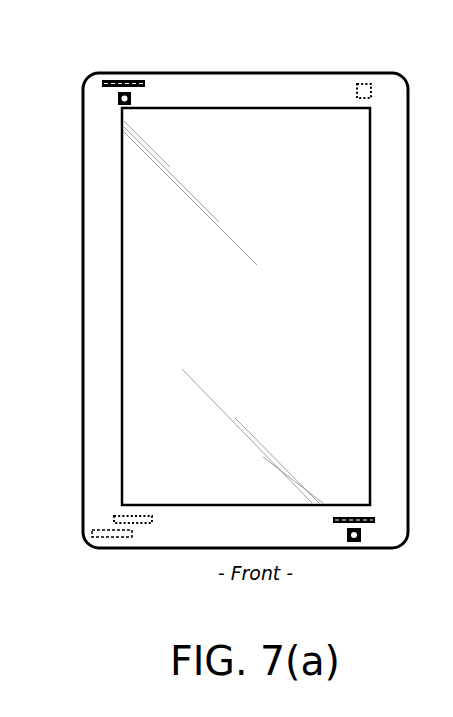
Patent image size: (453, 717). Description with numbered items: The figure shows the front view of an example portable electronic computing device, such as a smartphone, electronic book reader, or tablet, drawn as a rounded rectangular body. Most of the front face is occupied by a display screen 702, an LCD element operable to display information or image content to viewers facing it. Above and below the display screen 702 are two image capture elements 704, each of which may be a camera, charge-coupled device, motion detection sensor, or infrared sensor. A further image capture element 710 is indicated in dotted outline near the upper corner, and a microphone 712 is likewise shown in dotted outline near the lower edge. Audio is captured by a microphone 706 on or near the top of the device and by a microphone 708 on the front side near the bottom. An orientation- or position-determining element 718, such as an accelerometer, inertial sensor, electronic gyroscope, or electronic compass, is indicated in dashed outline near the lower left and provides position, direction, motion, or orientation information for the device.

The display screen 702 is at (122, 225).
The image capture element 704 is at (118, 97).
The microphone 706 is at (135, 80).
The microphone 708 is at (368, 523).
The image capture element 710 is at (362, 84).
The microphone 712 is at (133, 523).
The orientation- or position-determining element 718 is at (110, 537).